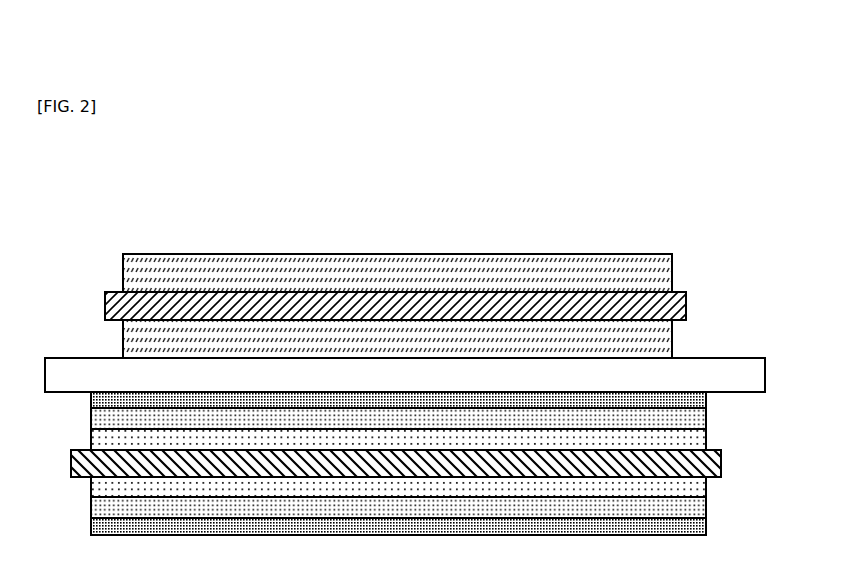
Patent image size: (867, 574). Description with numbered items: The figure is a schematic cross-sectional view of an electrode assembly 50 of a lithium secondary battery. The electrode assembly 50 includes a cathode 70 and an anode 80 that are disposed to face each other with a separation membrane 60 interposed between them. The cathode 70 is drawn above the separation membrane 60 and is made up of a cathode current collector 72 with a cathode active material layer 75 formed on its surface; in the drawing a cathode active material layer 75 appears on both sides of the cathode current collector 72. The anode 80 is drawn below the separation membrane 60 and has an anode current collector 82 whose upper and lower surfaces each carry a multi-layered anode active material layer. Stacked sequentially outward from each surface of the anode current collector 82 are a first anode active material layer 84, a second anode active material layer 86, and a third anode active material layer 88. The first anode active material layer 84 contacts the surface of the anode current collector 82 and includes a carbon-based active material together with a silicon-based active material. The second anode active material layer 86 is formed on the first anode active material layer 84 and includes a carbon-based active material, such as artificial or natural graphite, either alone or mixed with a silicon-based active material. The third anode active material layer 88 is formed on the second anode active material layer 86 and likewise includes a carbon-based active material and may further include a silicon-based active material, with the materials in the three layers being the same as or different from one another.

The electrode assembly 50 is at (399, 184).
The separation membrane 60 is at (760, 378).
The cathode 70 is at (465, 305).
The cathode current collector 72 is at (686, 303).
The cathode active material layer 75 is at (672, 278).
The anode 80 is at (460, 468).
The anode current collector 82 is at (721, 466).
The first anode active material layer 84 is at (700, 444).
The second anode active material layer 86 is at (706, 420).
The third anode active material layer 88 is at (700, 404).